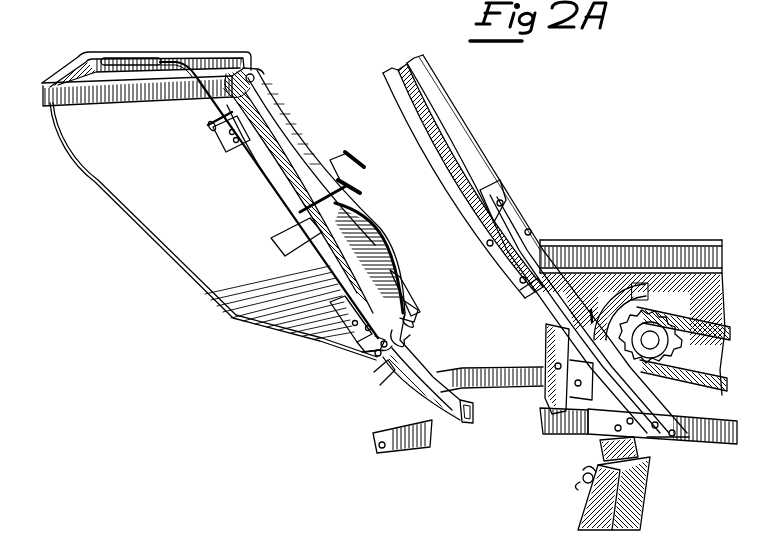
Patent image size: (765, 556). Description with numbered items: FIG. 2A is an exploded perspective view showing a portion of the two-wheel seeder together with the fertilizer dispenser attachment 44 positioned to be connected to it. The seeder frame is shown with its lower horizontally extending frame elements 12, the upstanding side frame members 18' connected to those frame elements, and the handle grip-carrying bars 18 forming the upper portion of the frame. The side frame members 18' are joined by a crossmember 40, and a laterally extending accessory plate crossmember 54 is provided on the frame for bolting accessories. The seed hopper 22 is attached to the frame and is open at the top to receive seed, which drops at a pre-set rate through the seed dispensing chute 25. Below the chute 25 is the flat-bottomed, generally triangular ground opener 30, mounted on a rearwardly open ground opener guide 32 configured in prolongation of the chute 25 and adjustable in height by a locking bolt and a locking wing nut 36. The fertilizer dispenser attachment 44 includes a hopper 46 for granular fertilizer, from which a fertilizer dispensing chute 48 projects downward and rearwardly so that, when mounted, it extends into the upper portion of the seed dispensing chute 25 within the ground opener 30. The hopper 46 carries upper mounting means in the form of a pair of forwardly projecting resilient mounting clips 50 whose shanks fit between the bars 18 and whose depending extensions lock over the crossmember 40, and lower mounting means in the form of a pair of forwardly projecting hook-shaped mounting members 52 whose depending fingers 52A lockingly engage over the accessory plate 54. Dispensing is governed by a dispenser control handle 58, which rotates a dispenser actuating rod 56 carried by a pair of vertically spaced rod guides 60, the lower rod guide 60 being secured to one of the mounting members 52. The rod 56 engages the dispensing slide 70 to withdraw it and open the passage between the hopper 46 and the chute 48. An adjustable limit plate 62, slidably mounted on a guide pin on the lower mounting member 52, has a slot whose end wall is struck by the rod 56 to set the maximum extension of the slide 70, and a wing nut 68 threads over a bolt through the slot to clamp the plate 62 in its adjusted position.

The frame elements 12 is at (470, 370).
The handle grip-carrying bars 18 is at (528, 246).
The upstanding side frame members 18' is at (520, 298).
The seed hopper 22 is at (622, 240).
The seed dispensing chute 25 is at (590, 436).
The ground opener 30 is at (648, 505).
The ground opener guide 32 is at (642, 452).
The locking wing nut 36 is at (583, 480).
The crossmember 40 is at (500, 200).
The fertilizer dispenser attachment 44 is at (78, 186).
The hopper 46 is at (218, 50).
The fertilizer dispensing chute 48 is at (460, 422).
The resilient mounting clips 50 is at (358, 166).
The hook-shaped mounting members 52 is at (400, 283).
The depending fingers 52A is at (416, 304).
The accessory plate crossmember 54 is at (548, 340).
The dispenser actuating rod 56 is at (264, 180).
The dispenser control handle 58 is at (128, 60).
The rod guides 60 is at (222, 140).
The adjustable limit plate 62 is at (412, 341).
The wing nut 68 is at (370, 357).
The dispensing slide 70 is at (418, 321).